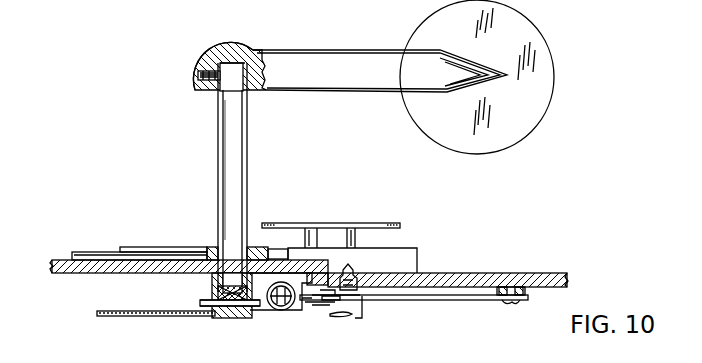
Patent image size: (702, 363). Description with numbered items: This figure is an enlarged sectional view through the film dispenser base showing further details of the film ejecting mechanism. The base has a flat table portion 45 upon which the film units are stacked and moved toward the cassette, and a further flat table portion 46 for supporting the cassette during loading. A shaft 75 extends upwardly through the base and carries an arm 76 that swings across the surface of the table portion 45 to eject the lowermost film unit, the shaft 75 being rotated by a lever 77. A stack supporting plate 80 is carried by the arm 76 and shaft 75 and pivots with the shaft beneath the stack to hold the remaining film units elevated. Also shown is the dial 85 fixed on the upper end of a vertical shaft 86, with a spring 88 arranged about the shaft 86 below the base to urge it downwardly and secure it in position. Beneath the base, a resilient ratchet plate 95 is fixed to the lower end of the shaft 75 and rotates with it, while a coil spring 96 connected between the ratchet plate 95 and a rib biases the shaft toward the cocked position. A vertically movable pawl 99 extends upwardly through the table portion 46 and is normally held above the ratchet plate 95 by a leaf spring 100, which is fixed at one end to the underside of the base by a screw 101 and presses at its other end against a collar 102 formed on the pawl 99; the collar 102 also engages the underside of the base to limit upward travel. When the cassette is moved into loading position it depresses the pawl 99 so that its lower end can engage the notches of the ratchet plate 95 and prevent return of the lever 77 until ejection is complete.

The table portion 45 is at (52, 262).
The table portion 46 is at (545, 280).
The shaft 75 is at (240, 192).
The arm 76 is at (82, 258).
The lever 77 is at (383, 78).
The plate 80 is at (125, 248).
The dial 85 is at (337, 224).
The shaft 86 is at (332, 303).
The spring 88 is at (313, 304).
The ratchet plate 95 is at (108, 316).
The coil spring 96 is at (268, 310).
The pawl 99 is at (356, 273).
The leaf spring 100 is at (452, 301).
The screw 101 is at (512, 305).
The collar 102 is at (360, 297).